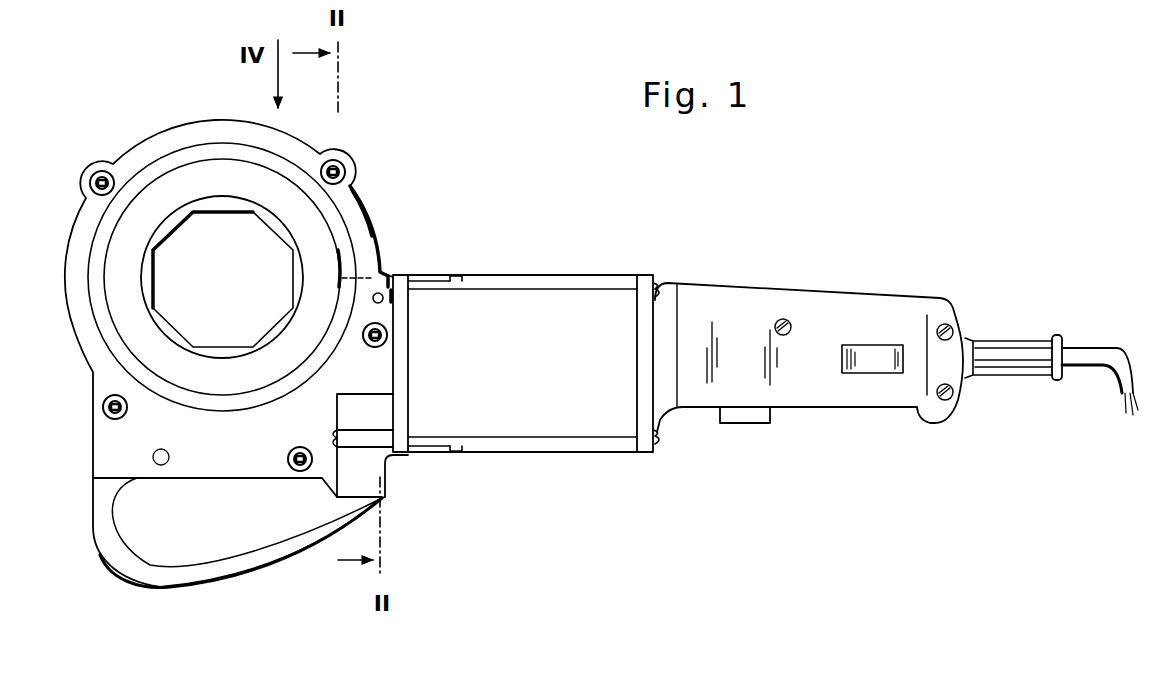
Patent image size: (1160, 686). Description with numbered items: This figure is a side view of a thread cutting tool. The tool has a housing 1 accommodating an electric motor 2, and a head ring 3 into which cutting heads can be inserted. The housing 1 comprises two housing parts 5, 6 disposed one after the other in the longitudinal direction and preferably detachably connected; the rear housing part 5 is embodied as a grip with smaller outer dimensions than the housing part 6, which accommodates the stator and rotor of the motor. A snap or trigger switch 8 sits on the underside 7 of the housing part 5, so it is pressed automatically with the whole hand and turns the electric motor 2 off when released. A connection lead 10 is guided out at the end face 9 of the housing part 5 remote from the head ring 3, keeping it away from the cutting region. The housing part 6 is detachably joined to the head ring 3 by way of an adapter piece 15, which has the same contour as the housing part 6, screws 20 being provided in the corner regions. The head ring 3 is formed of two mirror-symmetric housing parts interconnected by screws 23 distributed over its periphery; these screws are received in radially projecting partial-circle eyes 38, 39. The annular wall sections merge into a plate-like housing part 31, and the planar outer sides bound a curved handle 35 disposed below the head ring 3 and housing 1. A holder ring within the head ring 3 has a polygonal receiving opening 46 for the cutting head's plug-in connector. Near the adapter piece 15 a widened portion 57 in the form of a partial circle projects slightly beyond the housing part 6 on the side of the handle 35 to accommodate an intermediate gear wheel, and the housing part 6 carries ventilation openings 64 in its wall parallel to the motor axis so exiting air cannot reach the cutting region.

The housing 1 is at (643, 468).
The electric motor 2 is at (672, 455).
The head ring 3 is at (161, 113).
The housing part 5 is at (812, 395).
The housing part 6 is at (537, 430).
The underside 7 is at (880, 407).
The switch 8 is at (750, 418).
The end face 9 is at (955, 313).
The connection lead 10 is at (1088, 355).
The adapter piece 15 is at (387, 273).
The screws 20 is at (393, 300).
The screws 23 is at (332, 158).
The plate-like housing part 31 is at (247, 468).
The handle 35 is at (277, 572).
The eye 38 is at (355, 178).
The eye 39 is at (103, 167).
The polygonal receiving opening 46 is at (275, 258).
The widened portion 57 is at (377, 462).
The ventilation openings 64 is at (457, 274).